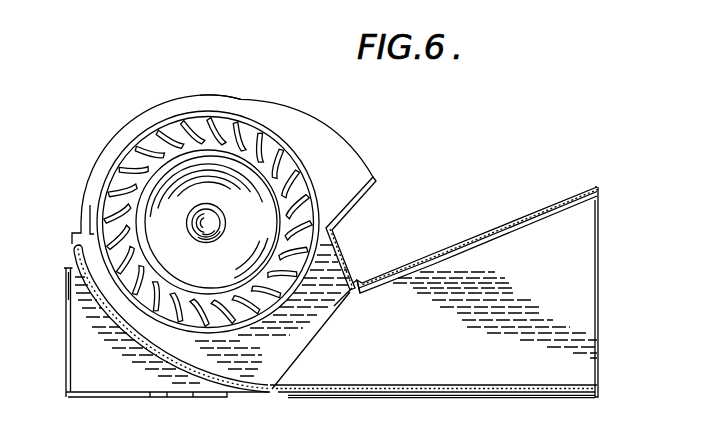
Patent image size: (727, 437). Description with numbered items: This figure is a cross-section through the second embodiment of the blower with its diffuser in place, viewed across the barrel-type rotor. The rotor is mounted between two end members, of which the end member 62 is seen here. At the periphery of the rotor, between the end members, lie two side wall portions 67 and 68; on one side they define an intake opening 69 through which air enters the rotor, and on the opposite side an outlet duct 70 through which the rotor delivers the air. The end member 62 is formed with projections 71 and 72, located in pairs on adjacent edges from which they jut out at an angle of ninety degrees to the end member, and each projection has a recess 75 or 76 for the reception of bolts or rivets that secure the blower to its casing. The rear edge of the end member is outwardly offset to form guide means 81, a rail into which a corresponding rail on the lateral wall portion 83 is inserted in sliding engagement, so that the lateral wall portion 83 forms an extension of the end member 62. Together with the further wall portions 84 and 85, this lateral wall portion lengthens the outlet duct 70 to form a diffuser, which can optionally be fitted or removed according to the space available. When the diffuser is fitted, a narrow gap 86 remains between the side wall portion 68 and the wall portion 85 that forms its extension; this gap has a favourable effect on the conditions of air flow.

The end member 62 is at (298, 147).
The side wall portion 67 is at (352, 193).
The side wall portion 68 is at (127, 337).
The intake opening 69 is at (173, 97).
The outlet duct 70 is at (348, 272).
The projection 71 is at (64, 334).
The projection 72 is at (128, 397).
The recess 75 is at (68, 296).
The recess 76 is at (182, 398).
The guide means 81 is at (376, 278).
The lateral wall portion 83 is at (555, 260).
The wall portion 84 is at (498, 238).
The wall portion 85 is at (388, 398).
The gap 86 is at (272, 392).